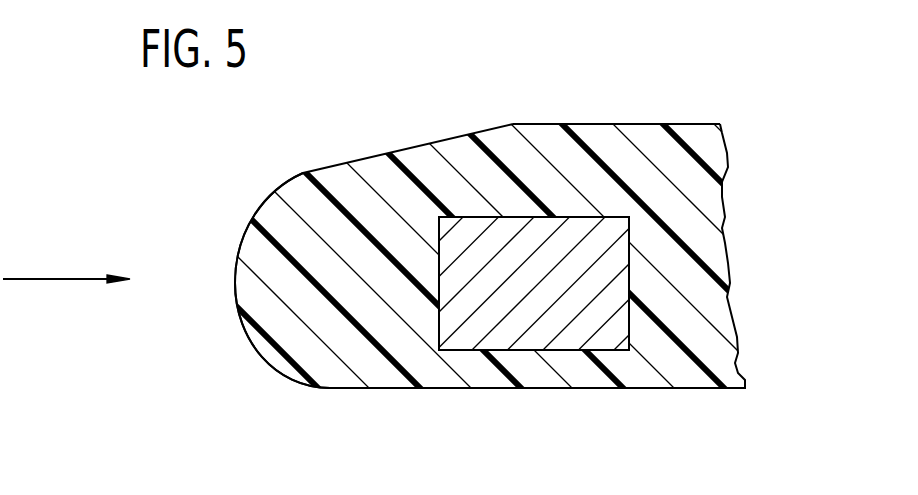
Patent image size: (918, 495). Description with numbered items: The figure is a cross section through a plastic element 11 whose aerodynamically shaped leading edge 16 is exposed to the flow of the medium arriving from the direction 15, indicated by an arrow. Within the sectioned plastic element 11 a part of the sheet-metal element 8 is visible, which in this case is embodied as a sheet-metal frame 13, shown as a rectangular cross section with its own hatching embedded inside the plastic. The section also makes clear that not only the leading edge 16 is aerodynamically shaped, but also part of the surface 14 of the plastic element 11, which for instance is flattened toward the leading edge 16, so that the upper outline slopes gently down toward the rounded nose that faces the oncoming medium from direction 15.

The sheet-metal element 8 is at (538, 351).
The sheet-metal frame 13 is at (528, 307).
The plastic element 11 is at (460, 153).
The surface 14 is at (593, 122).
The direction of flow 15 is at (38, 278).
The leading edge 16 is at (235, 287).